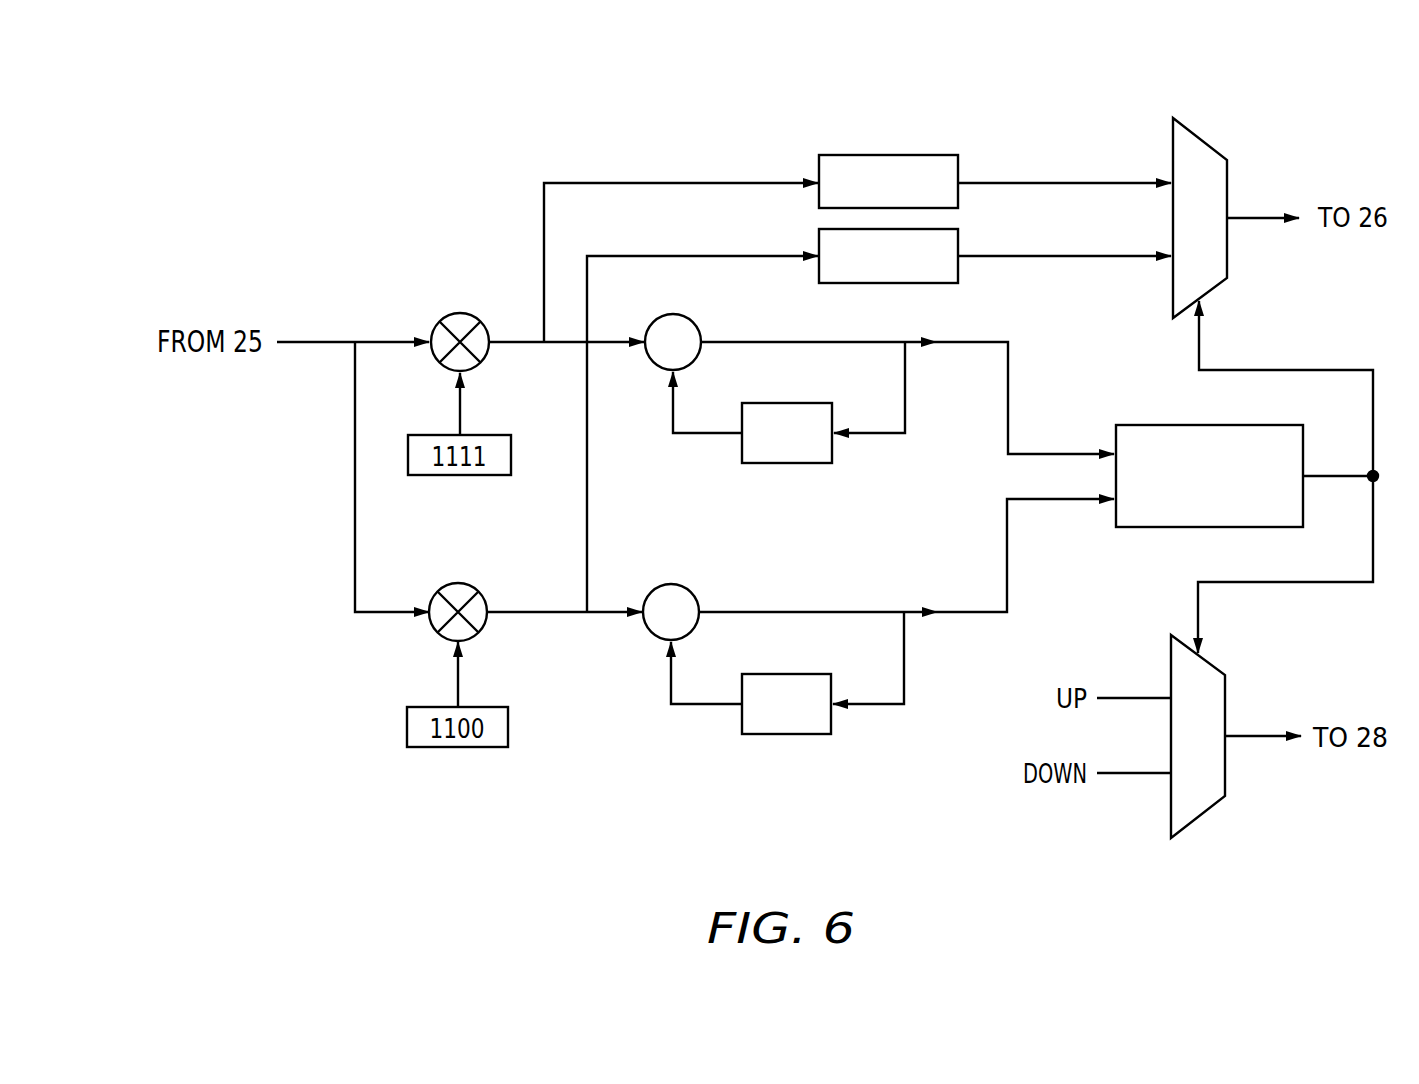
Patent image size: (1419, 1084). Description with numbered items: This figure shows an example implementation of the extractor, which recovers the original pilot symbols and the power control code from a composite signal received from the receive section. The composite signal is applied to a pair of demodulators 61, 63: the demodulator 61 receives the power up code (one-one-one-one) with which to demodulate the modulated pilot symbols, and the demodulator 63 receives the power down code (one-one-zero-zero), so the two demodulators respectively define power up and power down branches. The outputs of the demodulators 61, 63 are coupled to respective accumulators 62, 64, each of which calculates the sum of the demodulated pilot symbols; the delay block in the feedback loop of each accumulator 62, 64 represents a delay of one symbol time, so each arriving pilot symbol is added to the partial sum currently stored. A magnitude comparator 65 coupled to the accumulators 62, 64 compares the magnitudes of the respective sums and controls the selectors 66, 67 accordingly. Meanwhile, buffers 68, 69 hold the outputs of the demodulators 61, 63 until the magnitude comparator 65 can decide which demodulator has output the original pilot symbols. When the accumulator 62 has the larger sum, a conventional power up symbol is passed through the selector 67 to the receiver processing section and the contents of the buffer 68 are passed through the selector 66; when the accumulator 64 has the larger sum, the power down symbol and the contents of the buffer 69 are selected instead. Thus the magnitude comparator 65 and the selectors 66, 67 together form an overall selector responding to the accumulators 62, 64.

The demodulator 61 is at (458, 288).
The accumulator 62 is at (634, 420).
The demodulator 63 is at (457, 558).
The accumulator 64 is at (636, 660).
The magnitude comparator 65 is at (1140, 428).
The selector 66 is at (1198, 157).
The selector 67 is at (1190, 810).
The buffer 68 is at (947, 157).
The buffer 69 is at (947, 278).